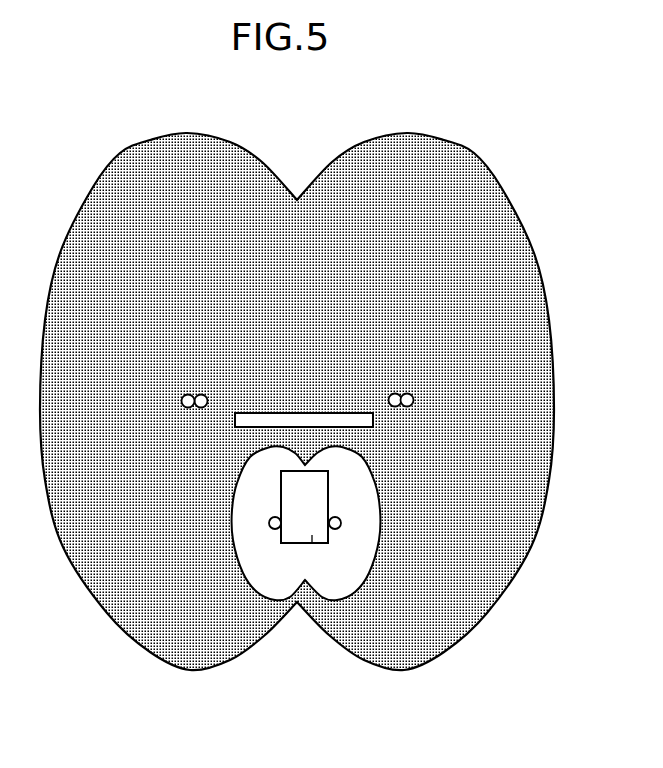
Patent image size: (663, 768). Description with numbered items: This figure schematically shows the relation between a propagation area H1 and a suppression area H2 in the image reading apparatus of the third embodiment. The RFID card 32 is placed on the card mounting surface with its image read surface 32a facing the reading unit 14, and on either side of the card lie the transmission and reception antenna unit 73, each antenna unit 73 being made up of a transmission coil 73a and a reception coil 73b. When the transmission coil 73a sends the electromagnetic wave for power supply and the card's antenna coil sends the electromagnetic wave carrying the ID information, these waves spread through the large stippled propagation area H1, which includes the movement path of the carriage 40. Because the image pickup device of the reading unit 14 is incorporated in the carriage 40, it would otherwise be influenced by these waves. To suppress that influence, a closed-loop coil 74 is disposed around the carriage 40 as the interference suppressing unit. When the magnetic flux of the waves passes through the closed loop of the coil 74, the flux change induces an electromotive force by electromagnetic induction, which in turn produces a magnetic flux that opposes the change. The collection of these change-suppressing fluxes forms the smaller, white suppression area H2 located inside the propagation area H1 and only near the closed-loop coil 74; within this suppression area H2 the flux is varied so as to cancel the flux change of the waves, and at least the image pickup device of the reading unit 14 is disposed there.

The propagation area H1 is at (505, 570).
The suppression area H2 is at (357, 568).
The RFID card 32 is at (305, 412).
The image read surface 32a is at (237, 428).
The transmission and reception antenna unit 73 is at (298, 371).
The transmission coil 73a is at (198, 394).
The reception coil 73b is at (186, 395).
The closed-loop coil 74 is at (269, 523).
The reading unit 14 is at (297, 544).
The carriage 40 is at (313, 543).